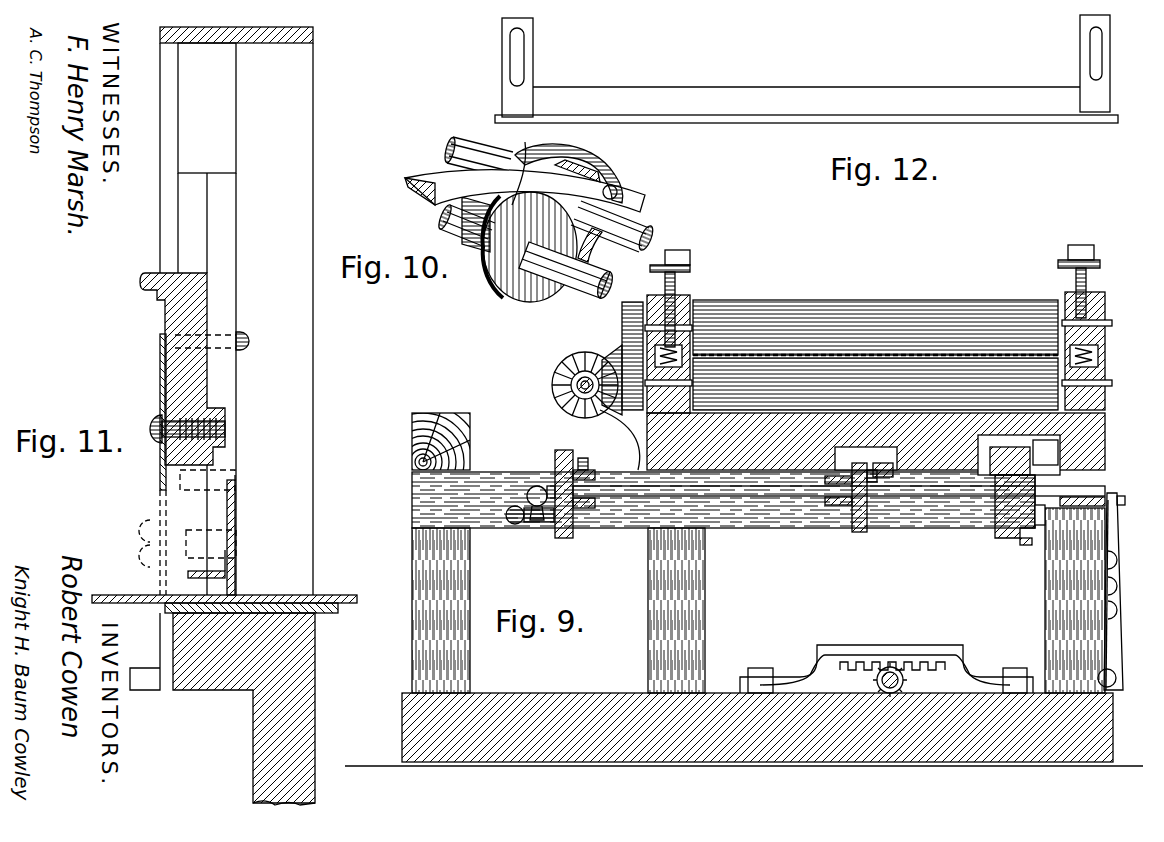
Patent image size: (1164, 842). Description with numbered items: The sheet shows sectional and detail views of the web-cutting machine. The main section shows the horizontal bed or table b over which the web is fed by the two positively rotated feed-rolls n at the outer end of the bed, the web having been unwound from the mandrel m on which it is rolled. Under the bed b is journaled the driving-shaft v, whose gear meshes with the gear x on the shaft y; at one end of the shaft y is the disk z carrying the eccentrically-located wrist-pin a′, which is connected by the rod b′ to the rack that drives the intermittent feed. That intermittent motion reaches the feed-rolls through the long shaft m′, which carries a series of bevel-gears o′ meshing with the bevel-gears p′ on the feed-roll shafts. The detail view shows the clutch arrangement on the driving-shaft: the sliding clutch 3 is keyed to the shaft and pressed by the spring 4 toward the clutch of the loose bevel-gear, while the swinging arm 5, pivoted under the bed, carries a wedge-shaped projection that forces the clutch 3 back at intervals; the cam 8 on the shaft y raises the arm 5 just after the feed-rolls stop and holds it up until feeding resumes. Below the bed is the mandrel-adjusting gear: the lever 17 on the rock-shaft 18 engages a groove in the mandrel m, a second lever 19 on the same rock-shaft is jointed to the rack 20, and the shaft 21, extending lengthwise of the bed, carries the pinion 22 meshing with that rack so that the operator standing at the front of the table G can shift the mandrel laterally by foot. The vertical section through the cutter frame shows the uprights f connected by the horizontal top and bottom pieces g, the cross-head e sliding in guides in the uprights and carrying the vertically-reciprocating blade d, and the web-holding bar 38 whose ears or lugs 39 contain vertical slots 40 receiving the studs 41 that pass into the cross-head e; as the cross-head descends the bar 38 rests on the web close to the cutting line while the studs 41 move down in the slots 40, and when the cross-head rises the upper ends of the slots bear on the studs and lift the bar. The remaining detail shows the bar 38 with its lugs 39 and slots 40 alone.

In FIG. 11, the horizontal top and bottom pieces g is at (248, 37).
In FIG. 11, the uprights f is at (207, 108).
In FIG. 11, the cross-head e is at (208, 240).
In FIG. 11, the vertically-reciprocating blade d is at (160, 376).
In FIG. 11, the studs 41 is at (221, 331).
In FIG. 11, the ears or lugs 39 is at (233, 416).
In FIG. 12, the ears or lugs 39 is at (533, 52).
In FIG. 11, the bar 38 is at (235, 525).
In FIG. 12, the bar 38 is at (783, 92).
In FIG. 11, the bed or table b is at (318, 596).
In FIG. 11, the table G is at (143, 690).
In FIG. 12, the vertical slots 40 is at (510, 70).
In FIG. 10, the sliding clutch 3 is at (510, 292).
In FIG. 10, the spring 4 is at (588, 291).
In FIG. 10, the swinging arm 5 is at (440, 172).
In FIG. 9, the swinging arm 5 is at (887, 478).
In FIG. 10, the cam 8 is at (606, 170).
In FIG. 9, the cam 8 is at (858, 531).
In FIG. 10, the disk z is at (520, 164).
In FIG. 9, the disk z is at (574, 460).
In FIG. 10, the shaft y is at (640, 223).
In FIG. 9, the shaft y is at (638, 496).
In FIG. 10, the driving-shaft v is at (609, 283).
In FIG. 9, the feed-rolls n is at (847, 304).
In FIG. 9, the bevel-gears p′ is at (625, 325).
In FIG. 9, the long shaft m′ is at (553, 396).
In FIG. 9, the bevel-gears o′ is at (562, 368).
In FIG. 9, the wrist-pin a′ is at (546, 486).
In FIG. 9, the rod b′ is at (520, 524).
In FIG. 9, the gear x is at (1015, 541).
In FIG. 9, the mandrel m is at (1121, 507).
In FIG. 9, the lever 17 is at (1119, 539).
In FIG. 9, the rock-shaft 18 is at (1119, 586).
In FIG. 9, the lever 19 is at (1118, 678).
In FIG. 9, the rack 20 is at (868, 656).
In FIG. 9, the shaft 21 is at (872, 683).
In FIG. 9, the pinion 22 is at (906, 683).